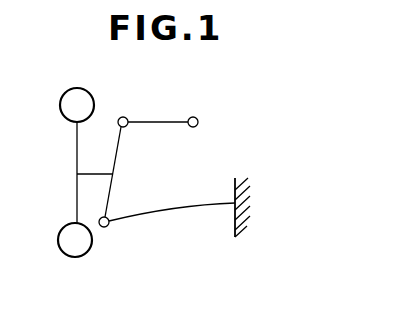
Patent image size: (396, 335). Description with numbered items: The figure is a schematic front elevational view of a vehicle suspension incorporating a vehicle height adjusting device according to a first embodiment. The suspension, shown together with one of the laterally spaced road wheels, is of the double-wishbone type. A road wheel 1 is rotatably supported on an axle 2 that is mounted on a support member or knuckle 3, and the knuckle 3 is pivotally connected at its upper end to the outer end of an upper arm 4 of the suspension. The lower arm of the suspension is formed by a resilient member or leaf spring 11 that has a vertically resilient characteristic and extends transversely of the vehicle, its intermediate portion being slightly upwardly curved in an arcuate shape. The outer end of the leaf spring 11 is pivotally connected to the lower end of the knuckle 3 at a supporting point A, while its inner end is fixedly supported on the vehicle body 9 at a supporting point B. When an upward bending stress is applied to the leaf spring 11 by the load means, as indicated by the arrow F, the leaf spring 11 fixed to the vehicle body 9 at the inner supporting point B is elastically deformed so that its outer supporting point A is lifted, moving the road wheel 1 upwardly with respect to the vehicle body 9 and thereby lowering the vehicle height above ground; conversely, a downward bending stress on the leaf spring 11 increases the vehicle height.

The road wheel 1 is at (62, 92).
The axle 2 is at (95, 173).
The knuckle 3 is at (118, 158).
The upper arm 4 is at (167, 117).
The vehicle body 9 is at (243, 195).
The leaf spring 11 is at (207, 203).
The supporting point A is at (107, 228).
The supporting point B is at (232, 209).
The arrow F is at (183, 208).